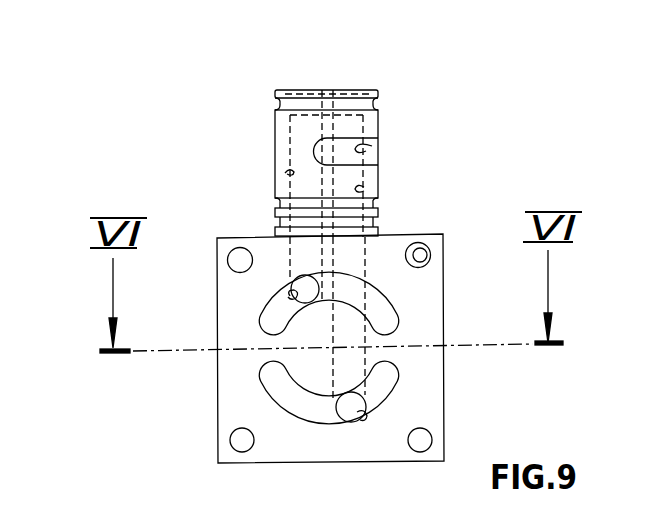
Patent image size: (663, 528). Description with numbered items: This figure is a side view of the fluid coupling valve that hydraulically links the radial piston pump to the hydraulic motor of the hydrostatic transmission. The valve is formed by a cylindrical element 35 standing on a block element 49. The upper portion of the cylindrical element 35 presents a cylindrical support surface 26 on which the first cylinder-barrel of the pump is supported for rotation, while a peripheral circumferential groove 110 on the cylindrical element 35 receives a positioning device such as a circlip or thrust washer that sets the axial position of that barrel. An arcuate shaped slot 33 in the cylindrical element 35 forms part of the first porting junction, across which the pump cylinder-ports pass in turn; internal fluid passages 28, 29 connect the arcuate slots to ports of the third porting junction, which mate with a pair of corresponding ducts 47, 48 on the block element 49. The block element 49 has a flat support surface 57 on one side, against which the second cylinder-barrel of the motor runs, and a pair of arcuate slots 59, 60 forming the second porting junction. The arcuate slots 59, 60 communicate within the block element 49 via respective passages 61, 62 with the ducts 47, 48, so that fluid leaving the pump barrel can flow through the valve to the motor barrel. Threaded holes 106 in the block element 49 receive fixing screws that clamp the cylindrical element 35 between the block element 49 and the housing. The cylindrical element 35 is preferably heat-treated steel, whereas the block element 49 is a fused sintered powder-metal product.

The cylindrical support surface 26 is at (275, 147).
The cylindrical element 35 is at (360, 89).
The internal fluid passage 29 is at (285, 173).
The arcuate shaped slot 33 is at (372, 146).
The internal fluid passage 28 is at (364, 187).
The peripheral circumferential groove 110 is at (393, 205).
The threaded hole 106 is at (418, 248).
The block element 49 is at (443, 333).
The flat support surface 57 is at (257, 418).
The arcuate slot 60 is at (380, 309).
The arcuate slot 59 is at (385, 384).
The passage 62 is at (305, 289).
The duct 48 is at (290, 296).
The passage 61 is at (352, 410).
The duct 47 is at (357, 412).